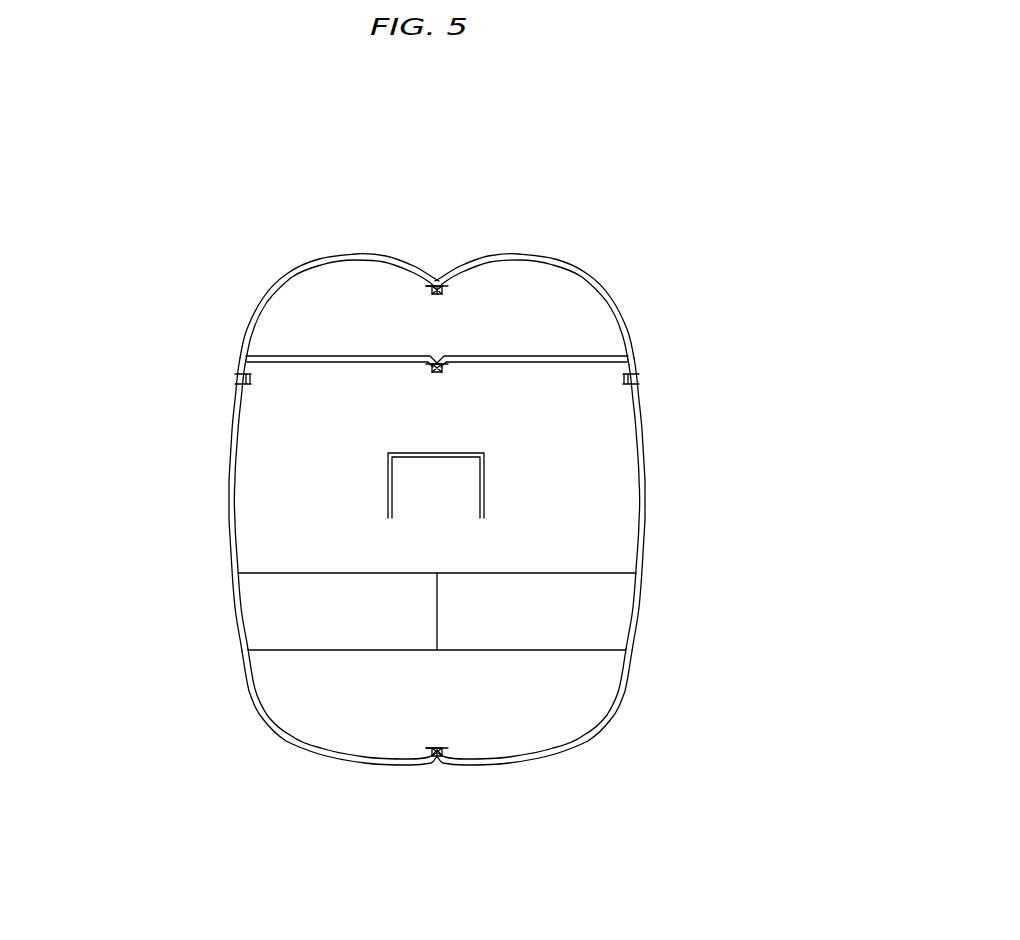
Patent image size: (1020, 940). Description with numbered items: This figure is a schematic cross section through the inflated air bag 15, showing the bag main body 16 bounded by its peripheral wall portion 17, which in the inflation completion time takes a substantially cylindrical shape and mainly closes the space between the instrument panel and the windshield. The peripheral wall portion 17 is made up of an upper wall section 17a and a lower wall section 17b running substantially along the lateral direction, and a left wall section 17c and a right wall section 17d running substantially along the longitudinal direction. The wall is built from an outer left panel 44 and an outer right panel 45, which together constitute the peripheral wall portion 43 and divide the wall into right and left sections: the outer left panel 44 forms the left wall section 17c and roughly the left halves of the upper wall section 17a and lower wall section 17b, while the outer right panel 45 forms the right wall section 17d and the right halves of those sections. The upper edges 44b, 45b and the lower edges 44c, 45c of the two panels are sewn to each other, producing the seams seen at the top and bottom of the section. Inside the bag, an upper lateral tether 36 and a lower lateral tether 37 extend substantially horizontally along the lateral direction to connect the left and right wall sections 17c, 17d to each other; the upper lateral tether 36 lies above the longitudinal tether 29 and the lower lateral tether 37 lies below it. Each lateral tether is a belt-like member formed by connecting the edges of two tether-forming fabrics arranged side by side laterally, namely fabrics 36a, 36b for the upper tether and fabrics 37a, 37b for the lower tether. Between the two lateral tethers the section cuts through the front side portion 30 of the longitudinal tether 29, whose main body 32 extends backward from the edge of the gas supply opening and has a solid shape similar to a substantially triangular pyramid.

The air bag 15 is at (437, 498).
The bag main body 16 is at (618, 235).
The peripheral wall portion 17 is at (236, 325).
The upper wall section 17a is at (507, 258).
The lower wall section 17b is at (487, 765).
The left wall section 17c is at (644, 508).
The right wall section 17d is at (229, 507).
The upper lateral tether 36 is at (485, 334).
The tether-forming fabric 36a is at (527, 364).
The tether-forming fabric 36b is at (344, 364).
The lower lateral tether 37 is at (462, 660).
The tether-forming fabric 37a is at (531, 645).
The tether-forming fabric 37b is at (341, 645).
The main body 32 is at (492, 478).
The front side portion 30 is at (502, 494).
The longitudinal tether 29 is at (502, 494).
The peripheral wall portion 43 is at (437, 521).
The outer left panel 44 is at (648, 626).
The upper edge 44b is at (438, 296).
The lower edge 44c is at (437, 748).
The outer right panel 45 is at (226, 624).
The upper edge 45b is at (434, 294).
The lower edge 45c is at (432, 750).